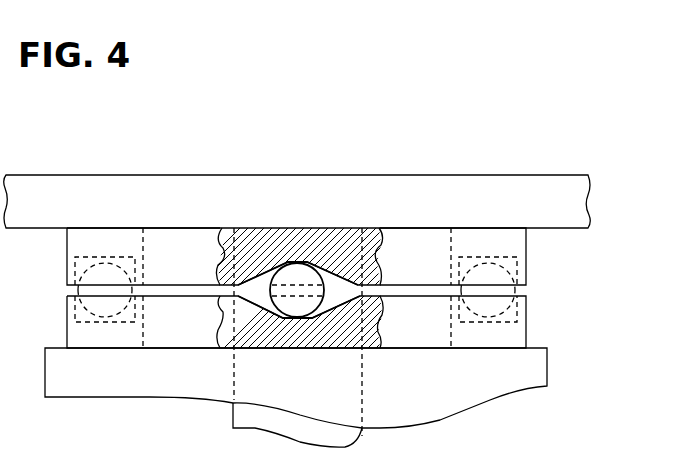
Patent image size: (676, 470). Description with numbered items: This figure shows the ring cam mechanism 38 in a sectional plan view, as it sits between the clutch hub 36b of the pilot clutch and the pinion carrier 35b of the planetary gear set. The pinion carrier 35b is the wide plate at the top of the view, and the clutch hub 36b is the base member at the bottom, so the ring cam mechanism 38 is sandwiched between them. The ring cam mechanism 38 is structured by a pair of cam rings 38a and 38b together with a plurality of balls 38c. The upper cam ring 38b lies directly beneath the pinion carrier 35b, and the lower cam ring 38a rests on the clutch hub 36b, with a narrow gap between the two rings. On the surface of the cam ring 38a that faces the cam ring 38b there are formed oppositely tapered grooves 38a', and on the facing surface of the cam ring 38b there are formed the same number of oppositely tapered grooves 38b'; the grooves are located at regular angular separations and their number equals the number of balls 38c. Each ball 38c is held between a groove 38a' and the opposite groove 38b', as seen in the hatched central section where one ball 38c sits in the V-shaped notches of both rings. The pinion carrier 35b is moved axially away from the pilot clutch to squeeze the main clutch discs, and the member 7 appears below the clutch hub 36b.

The pinion carrier 35b is at (536, 188).
The ring cam mechanism 38 is at (369, 275).
The cam ring 38b is at (331, 264).
The cam ring 38a is at (342, 323).
The oppositely tapered grooves 38b' is at (316, 236).
The oppositely tapered grooves 38a' is at (312, 346).
The balls 38c is at (296, 306).
The clutch hub 36b is at (522, 369).
The frame / support member 7 is at (233, 413).